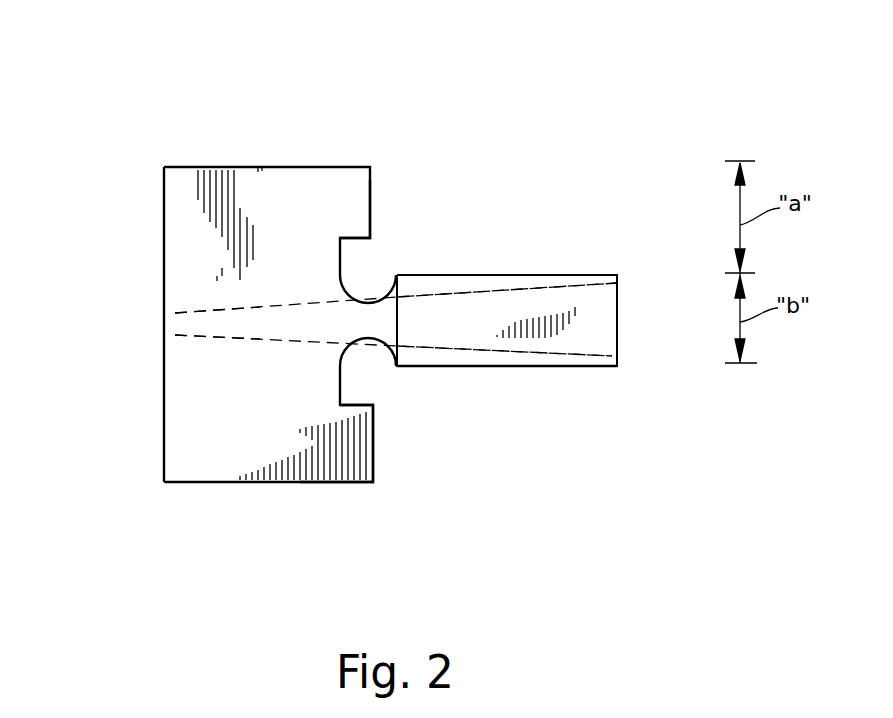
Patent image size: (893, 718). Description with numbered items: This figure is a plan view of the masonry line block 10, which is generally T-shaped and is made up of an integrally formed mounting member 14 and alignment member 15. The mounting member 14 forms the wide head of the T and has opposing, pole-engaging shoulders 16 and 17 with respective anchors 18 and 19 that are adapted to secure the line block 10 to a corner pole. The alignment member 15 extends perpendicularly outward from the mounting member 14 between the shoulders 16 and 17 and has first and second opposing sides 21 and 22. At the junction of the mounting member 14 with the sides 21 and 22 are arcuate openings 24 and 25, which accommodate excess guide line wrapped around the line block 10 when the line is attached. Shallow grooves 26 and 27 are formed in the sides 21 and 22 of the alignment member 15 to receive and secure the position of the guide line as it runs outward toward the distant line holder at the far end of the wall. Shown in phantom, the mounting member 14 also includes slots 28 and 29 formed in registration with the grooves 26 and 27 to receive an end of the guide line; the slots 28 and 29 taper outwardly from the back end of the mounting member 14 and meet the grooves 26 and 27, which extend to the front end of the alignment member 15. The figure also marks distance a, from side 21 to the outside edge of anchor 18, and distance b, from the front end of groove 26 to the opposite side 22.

The line block 10 is at (75, 93).
The mounting member 14 is at (163, 323).
The alignment member 15 is at (598, 300).
The pole-engaging shoulder 16 is at (290, 175).
The pole-engaging shoulder 17 is at (216, 455).
The anchor 18 is at (362, 195).
The anchor 19 is at (358, 457).
The first side 21 is at (575, 275).
The second side 22 is at (605, 367).
The arcuate opening 24 is at (342, 267).
The arcuate opening 25 is at (343, 379).
The groove 26 is at (494, 290).
The groove 27 is at (542, 353).
The slot 28 is at (180, 312).
The slot 29 is at (205, 338).